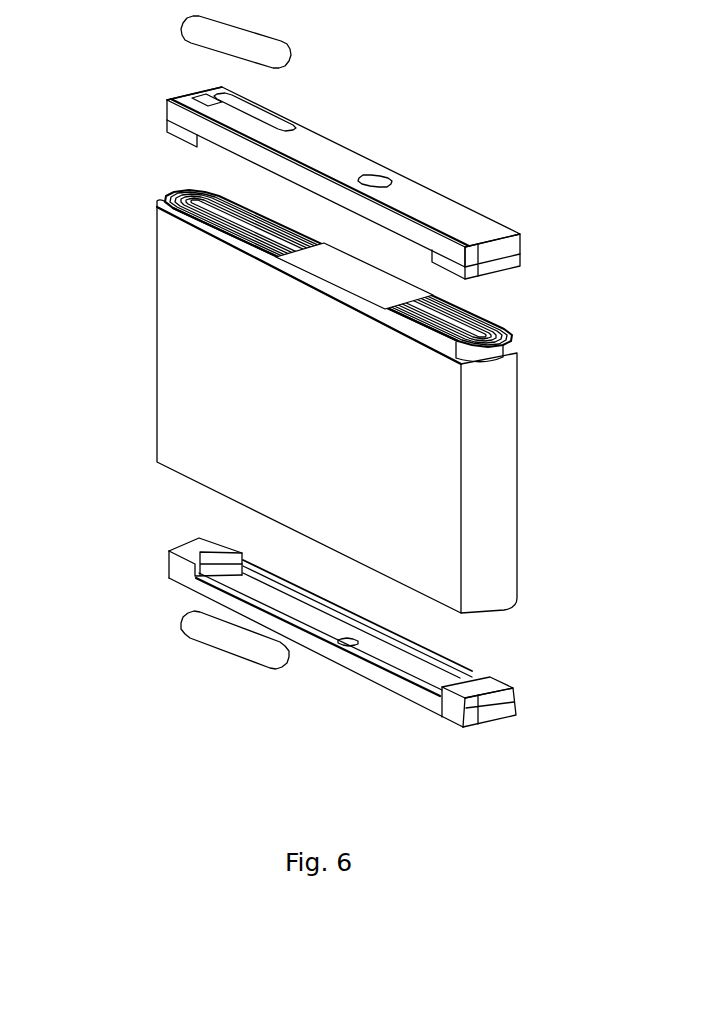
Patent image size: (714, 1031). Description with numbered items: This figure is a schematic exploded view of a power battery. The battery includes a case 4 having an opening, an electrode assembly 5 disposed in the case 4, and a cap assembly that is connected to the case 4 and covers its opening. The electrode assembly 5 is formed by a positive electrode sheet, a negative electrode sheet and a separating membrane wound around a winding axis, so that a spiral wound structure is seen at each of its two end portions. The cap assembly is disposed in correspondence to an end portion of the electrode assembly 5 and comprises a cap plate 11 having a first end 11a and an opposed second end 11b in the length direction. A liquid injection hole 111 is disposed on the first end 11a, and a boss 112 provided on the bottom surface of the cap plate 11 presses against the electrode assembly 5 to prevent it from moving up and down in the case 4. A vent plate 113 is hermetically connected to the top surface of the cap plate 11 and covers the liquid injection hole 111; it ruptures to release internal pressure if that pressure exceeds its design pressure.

The case 4 is at (177, 330).
The electrode assembly 5 is at (487, 318).
The cap plate 11 is at (447, 210).
The first end 11a is at (152, 107).
The second end 11b is at (519, 230).
The liquid injection hole 111 is at (200, 97).
The boss 112 is at (180, 132).
The vent plate 113 is at (262, 48).